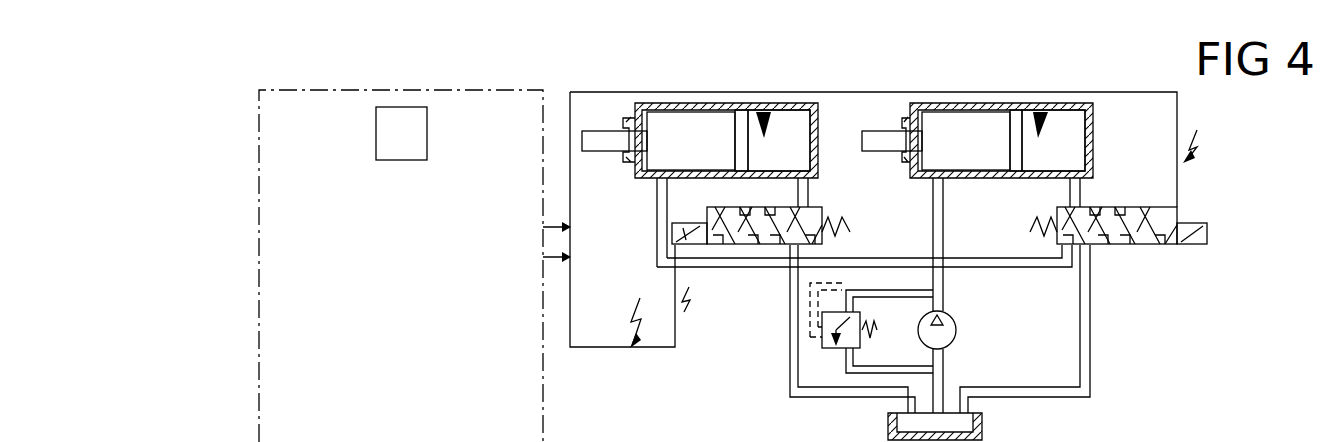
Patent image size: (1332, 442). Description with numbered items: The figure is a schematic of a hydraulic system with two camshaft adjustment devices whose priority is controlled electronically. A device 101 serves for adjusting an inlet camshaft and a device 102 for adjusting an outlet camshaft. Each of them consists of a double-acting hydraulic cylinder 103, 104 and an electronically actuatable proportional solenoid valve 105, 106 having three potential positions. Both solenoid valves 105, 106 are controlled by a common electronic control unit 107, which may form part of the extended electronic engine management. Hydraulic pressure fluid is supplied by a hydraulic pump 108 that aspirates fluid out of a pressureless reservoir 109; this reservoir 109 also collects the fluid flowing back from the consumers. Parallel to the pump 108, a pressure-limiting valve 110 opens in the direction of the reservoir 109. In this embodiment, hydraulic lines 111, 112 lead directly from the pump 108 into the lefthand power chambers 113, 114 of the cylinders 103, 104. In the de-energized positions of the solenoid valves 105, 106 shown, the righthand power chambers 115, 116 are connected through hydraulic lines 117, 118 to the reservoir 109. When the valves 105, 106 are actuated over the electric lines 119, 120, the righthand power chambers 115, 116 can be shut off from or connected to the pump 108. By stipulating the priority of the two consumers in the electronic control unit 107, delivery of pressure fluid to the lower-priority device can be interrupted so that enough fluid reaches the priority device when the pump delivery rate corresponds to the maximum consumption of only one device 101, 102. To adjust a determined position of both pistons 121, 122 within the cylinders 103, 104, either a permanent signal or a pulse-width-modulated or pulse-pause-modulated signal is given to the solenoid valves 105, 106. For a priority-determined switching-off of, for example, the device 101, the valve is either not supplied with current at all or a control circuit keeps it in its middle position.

The device for the adjustment of an inlet camshaft 101 is at (1108, 143).
The device for the adjustment of an outlet camshaft 102 is at (832, 148).
The double-acting hydraulic cylinder 103 is at (1040, 112).
The double-acting hydraulic cylinder 104 is at (764, 112).
The proportional solenoid valve 105 is at (1110, 247).
The proportional solenoid valve 106 is at (765, 245).
The electronic control unit 107 is at (259, 253).
The hydraulic pump 108 is at (950, 337).
The pressureless reservoir 109 is at (982, 430).
The pressure-limiting valve 110 is at (838, 346).
The hydraulic line 111 is at (945, 218).
The hydraulic line 112 is at (657, 218).
The lefthand power chamber 113 is at (945, 118).
The lefthand power chamber 114 is at (660, 118).
The righthand power chamber 115 is at (1070, 120).
The righthand power chamber 116 is at (793, 125).
The hydraulic line 117 is at (1090, 345).
The hydraulic line 118 is at (790, 340).
The electric line 119 is at (1180, 118).
The electric line 120 is at (585, 348).
The piston 121 is at (1012, 118).
The piston 122 is at (742, 118).